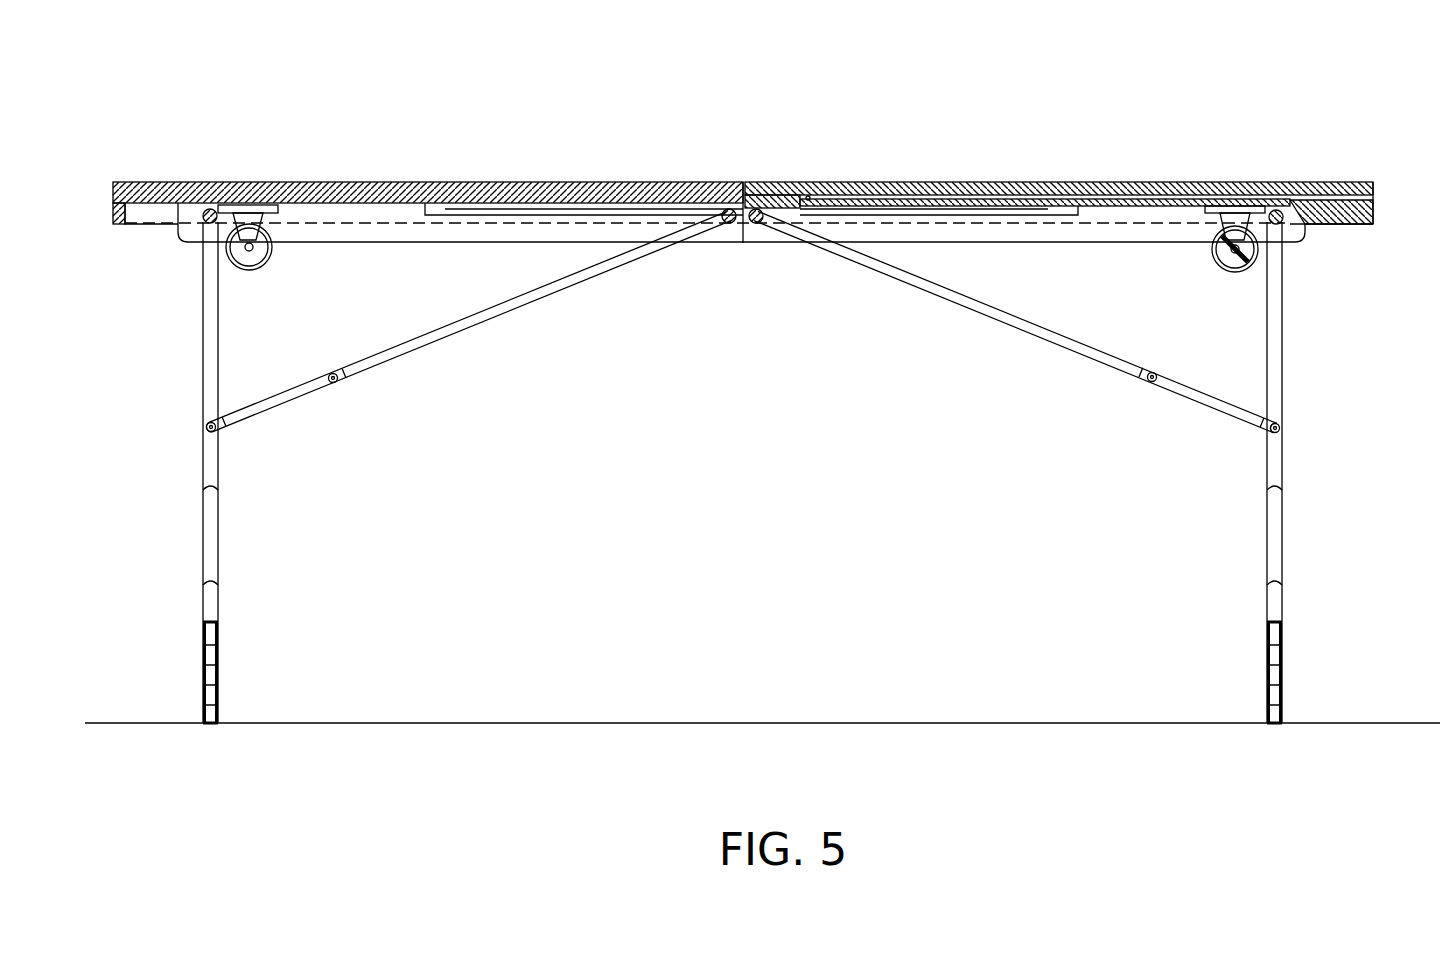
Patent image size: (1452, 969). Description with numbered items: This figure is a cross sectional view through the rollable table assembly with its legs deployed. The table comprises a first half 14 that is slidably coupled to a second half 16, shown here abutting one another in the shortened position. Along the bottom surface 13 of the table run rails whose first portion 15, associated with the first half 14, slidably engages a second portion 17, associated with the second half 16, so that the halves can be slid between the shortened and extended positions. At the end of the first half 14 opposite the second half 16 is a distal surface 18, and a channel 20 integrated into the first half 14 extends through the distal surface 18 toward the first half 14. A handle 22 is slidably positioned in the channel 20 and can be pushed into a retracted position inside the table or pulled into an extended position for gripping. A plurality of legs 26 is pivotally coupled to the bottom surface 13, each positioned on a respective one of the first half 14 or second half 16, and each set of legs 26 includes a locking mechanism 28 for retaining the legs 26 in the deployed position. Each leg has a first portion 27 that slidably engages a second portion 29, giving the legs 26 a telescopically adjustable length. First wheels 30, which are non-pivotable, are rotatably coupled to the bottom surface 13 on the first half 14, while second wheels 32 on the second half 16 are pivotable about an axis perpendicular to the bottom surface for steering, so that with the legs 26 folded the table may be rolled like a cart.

The bottom surface 13 is at (622, 215).
The first half 14 is at (1243, 180).
The first portion 15 is at (914, 245).
The second half 16 is at (485, 182).
The second portion 17 is at (543, 245).
The distal surface 18 is at (1383, 182).
The channel 20 is at (1398, 219).
The handle 22 is at (1333, 205).
The legs 26 is at (207, 311).
The first portion 27 is at (170, 607).
The locking mechanism 28 is at (397, 350).
The second portion 29 is at (213, 620).
The first wheels 30 is at (275, 257).
The second wheels 32 is at (1215, 262).